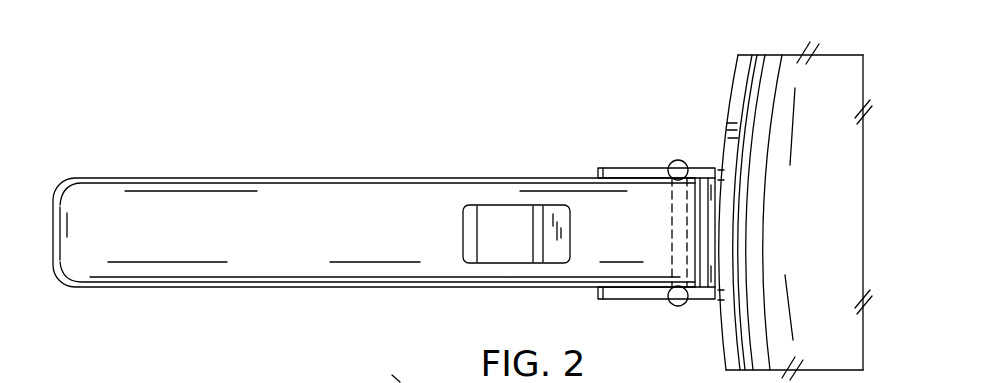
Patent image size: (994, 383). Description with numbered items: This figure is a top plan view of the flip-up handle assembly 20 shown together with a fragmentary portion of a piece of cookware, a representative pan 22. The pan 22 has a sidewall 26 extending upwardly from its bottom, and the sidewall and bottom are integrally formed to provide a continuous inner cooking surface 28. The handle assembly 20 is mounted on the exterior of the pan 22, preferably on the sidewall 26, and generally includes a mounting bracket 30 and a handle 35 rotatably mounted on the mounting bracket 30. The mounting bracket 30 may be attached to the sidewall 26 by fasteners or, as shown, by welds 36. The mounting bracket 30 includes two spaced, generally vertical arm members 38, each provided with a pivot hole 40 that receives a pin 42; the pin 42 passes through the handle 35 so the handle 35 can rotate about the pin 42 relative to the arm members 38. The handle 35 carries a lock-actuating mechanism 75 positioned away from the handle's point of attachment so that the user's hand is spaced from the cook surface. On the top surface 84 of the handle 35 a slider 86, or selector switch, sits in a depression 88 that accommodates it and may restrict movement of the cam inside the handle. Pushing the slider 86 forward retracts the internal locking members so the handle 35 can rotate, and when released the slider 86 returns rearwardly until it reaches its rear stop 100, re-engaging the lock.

The handle assembly 20 is at (403, 121).
The pan 22 is at (716, 82).
The sidewall 26 is at (733, 72).
The inner cooking surface 28 is at (847, 193).
The mounting bracket 30 is at (615, 155).
The handle 35 is at (286, 175).
The welds 36 is at (714, 301).
The arm members 38 is at (608, 173).
The pivot hole 40 is at (672, 158).
The pin 42 is at (687, 157).
The lock-actuating mechanism 75 is at (487, 275).
The top surface 84 is at (442, 233).
The slider 86 is at (483, 247).
The depression 88 is at (558, 248).
The rear stop 100 is at (468, 215).